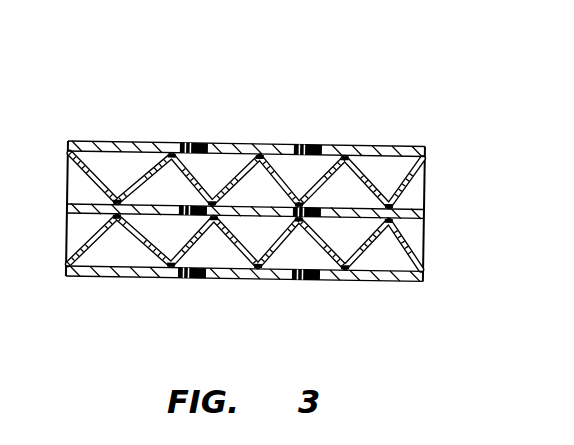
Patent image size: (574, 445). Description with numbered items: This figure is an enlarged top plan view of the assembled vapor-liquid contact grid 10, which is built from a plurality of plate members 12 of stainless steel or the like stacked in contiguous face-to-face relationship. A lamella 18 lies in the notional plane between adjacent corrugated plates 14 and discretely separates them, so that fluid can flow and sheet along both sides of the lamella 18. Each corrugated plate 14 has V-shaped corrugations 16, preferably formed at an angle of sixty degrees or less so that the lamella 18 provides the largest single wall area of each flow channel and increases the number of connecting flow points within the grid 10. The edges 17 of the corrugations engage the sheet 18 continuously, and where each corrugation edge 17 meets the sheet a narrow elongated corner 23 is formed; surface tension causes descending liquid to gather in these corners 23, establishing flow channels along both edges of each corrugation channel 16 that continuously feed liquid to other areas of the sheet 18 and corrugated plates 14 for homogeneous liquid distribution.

The grid assembly 10 is at (273, 129).
The plate member 12 is at (92, 148).
The corrugated plate 14 is at (363, 212).
The corrugation 16 is at (213, 200).
The corrugation edge 17 is at (173, 155).
The lamella 18 is at (370, 186).
The corner 23 is at (118, 204).